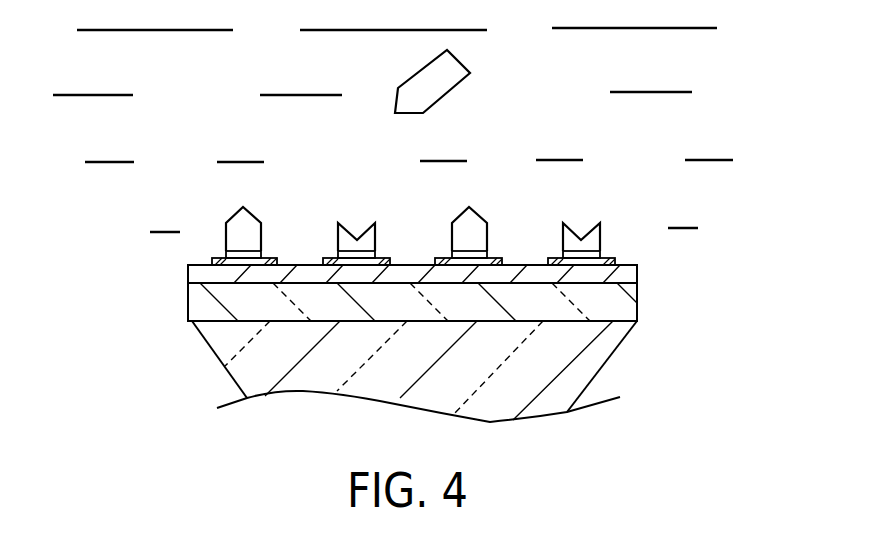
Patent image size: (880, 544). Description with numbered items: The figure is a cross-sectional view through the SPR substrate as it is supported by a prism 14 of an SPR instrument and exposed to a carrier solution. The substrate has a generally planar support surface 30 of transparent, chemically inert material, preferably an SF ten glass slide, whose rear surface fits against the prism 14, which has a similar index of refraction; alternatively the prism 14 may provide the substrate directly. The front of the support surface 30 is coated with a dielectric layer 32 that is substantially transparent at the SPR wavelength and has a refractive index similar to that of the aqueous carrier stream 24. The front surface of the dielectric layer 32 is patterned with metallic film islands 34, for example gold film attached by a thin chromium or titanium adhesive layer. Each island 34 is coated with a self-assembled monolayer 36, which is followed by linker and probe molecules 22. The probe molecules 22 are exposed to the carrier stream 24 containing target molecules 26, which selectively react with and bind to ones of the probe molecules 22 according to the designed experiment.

The prism 14 is at (222, 348).
The probe molecules 22 is at (238, 222).
The carrier stream 24 is at (560, 92).
The target molecules 26 is at (429, 80).
The support surface 30 is at (628, 302).
The dielectric layer 32 is at (628, 273).
The metallic film islands 34 is at (215, 261).
The self-assembled monolayer 36 is at (262, 256).